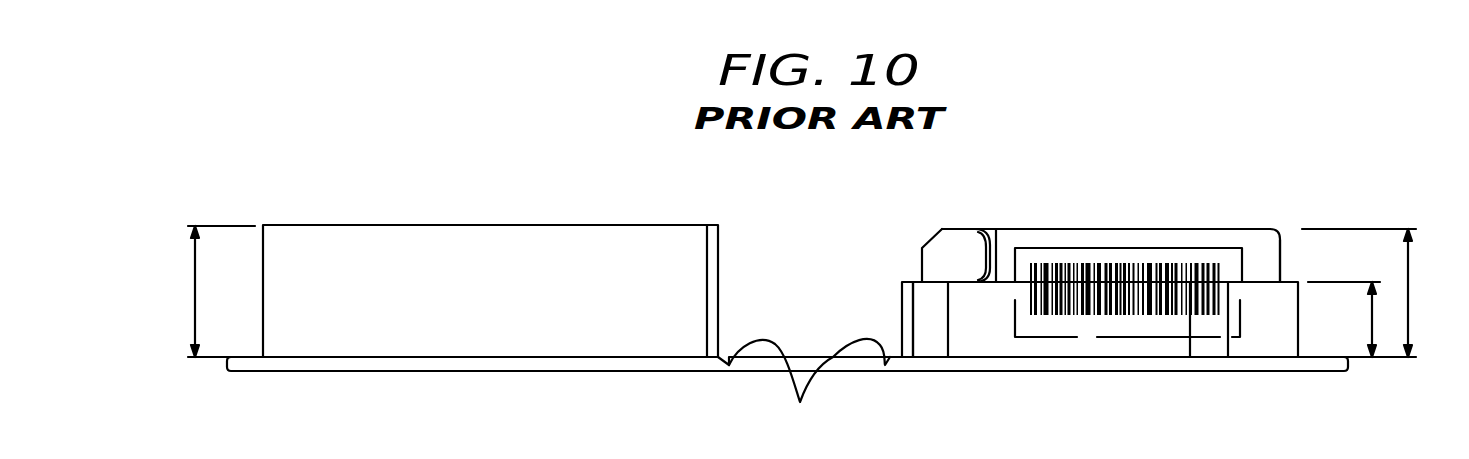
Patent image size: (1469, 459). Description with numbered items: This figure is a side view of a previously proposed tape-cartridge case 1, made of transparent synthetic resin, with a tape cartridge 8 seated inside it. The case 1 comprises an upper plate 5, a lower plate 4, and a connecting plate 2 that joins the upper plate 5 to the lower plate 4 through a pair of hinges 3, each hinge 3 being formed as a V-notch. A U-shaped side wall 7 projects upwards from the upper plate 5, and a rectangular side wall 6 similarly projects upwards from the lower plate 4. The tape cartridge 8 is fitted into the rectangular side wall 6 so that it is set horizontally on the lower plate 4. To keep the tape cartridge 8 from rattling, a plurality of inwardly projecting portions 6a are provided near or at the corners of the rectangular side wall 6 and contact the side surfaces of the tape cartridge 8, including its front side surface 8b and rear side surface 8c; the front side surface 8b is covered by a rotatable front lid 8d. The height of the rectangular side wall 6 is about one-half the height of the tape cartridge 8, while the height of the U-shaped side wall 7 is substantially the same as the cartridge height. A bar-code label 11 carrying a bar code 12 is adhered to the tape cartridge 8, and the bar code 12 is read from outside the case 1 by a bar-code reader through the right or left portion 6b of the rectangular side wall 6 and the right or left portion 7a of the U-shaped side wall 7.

The tape-cartridge case 1 is at (538, 184).
The connecting plate 2 is at (810, 357).
The hinges 3 is at (809, 388).
The lower plate 4 is at (1095, 372).
The upper plate 5 is at (368, 372).
The rectangular side wall 6 is at (1260, 282).
The inwardly projecting portions 6a is at (928, 338).
The right or left portion of the rectangular side wall 6b is at (997, 340).
The U-shaped side wall 7 is at (372, 225).
The right or left portion of the U-shaped side wall 7a is at (593, 338).
The tape cartridge 8 is at (1152, 229).
The front side surface 8b is at (922, 258).
The rear side surface 8c is at (1283, 265).
The front lid 8d is at (958, 248).
The bar-code label 11 is at (1090, 250).
The bar code 12 is at (1048, 268).